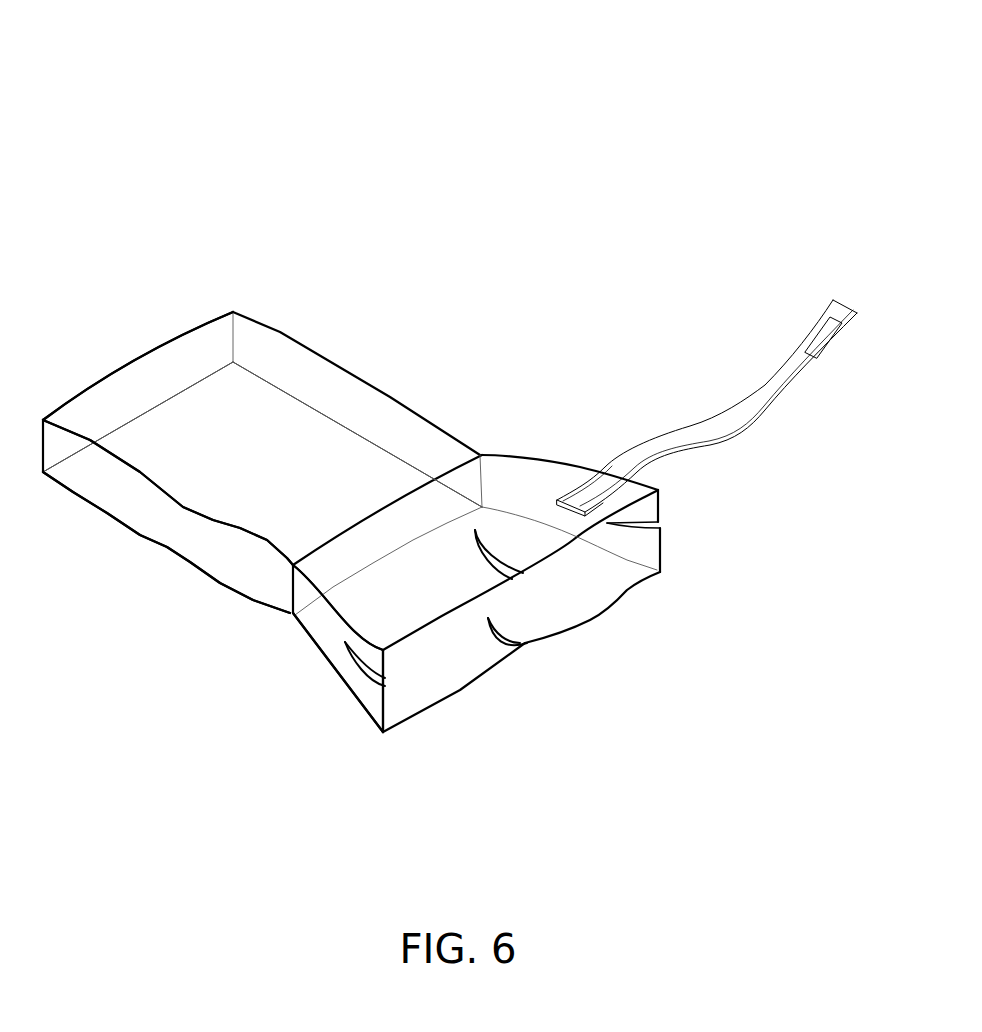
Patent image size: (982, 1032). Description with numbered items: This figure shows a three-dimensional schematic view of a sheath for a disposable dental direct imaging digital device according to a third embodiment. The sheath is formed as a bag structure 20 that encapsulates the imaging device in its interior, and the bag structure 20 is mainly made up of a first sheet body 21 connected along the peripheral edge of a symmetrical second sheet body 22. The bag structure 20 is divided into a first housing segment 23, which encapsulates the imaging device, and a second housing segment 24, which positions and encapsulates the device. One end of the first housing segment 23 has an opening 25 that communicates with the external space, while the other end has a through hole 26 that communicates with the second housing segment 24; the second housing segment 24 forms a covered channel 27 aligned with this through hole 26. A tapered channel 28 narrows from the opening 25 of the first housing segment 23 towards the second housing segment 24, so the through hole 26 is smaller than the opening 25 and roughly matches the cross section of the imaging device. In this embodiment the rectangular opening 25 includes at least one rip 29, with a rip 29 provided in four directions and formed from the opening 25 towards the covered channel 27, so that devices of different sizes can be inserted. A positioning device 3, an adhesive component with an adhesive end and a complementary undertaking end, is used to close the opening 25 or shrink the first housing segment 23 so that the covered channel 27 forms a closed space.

The bag structure 20 is at (248, 133).
The first sheet body 21 is at (98, 382).
The second sheet body 22 is at (173, 387).
The first housing segment 23 is at (500, 485).
The second housing segment 24 is at (303, 393).
The opening 25 is at (603, 612).
The through hole 26 is at (380, 505).
The covered channel 27 is at (132, 620).
The tapered channel 28 is at (262, 758).
The rip 29 is at (503, 650).
The positioning device 3 is at (745, 402).